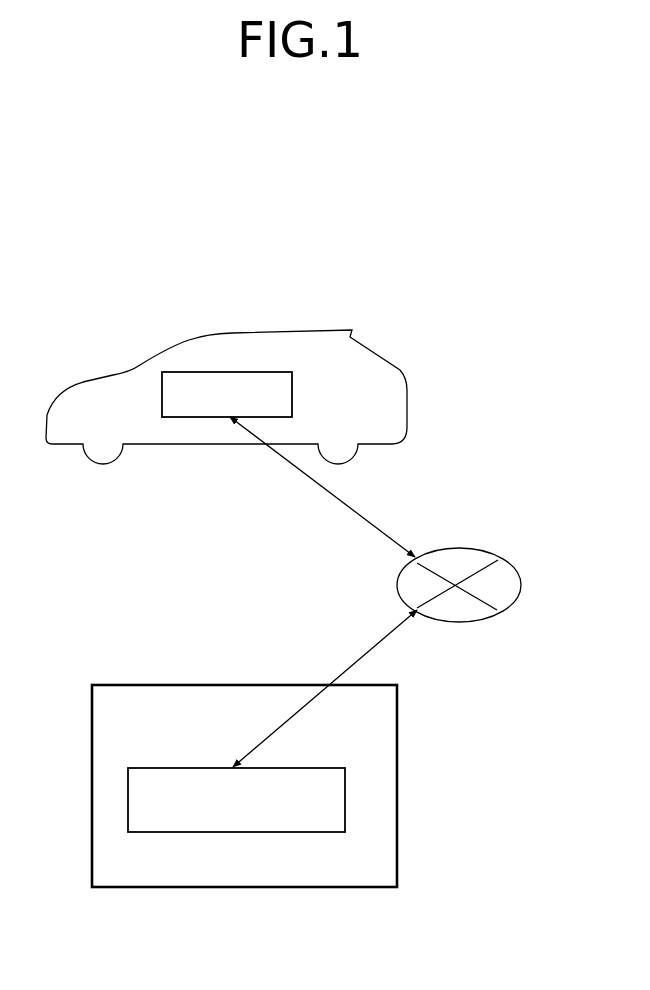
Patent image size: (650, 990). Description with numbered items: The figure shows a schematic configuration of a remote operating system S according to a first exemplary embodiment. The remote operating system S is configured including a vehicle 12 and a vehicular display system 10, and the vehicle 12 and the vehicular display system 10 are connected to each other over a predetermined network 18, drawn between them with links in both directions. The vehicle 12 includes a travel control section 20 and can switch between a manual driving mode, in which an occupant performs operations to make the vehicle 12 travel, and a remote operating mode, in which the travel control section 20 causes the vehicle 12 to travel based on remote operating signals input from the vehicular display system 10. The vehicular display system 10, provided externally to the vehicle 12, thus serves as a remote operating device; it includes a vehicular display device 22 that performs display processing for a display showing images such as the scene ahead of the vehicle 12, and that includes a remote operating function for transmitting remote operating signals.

The remote operating system S is at (476, 218).
The vehicular display system 10 is at (250, 683).
The vehicle 12 is at (297, 330).
The network 18 is at (467, 547).
The travel control section 20 is at (222, 372).
The vehicular display device 22 is at (170, 768).